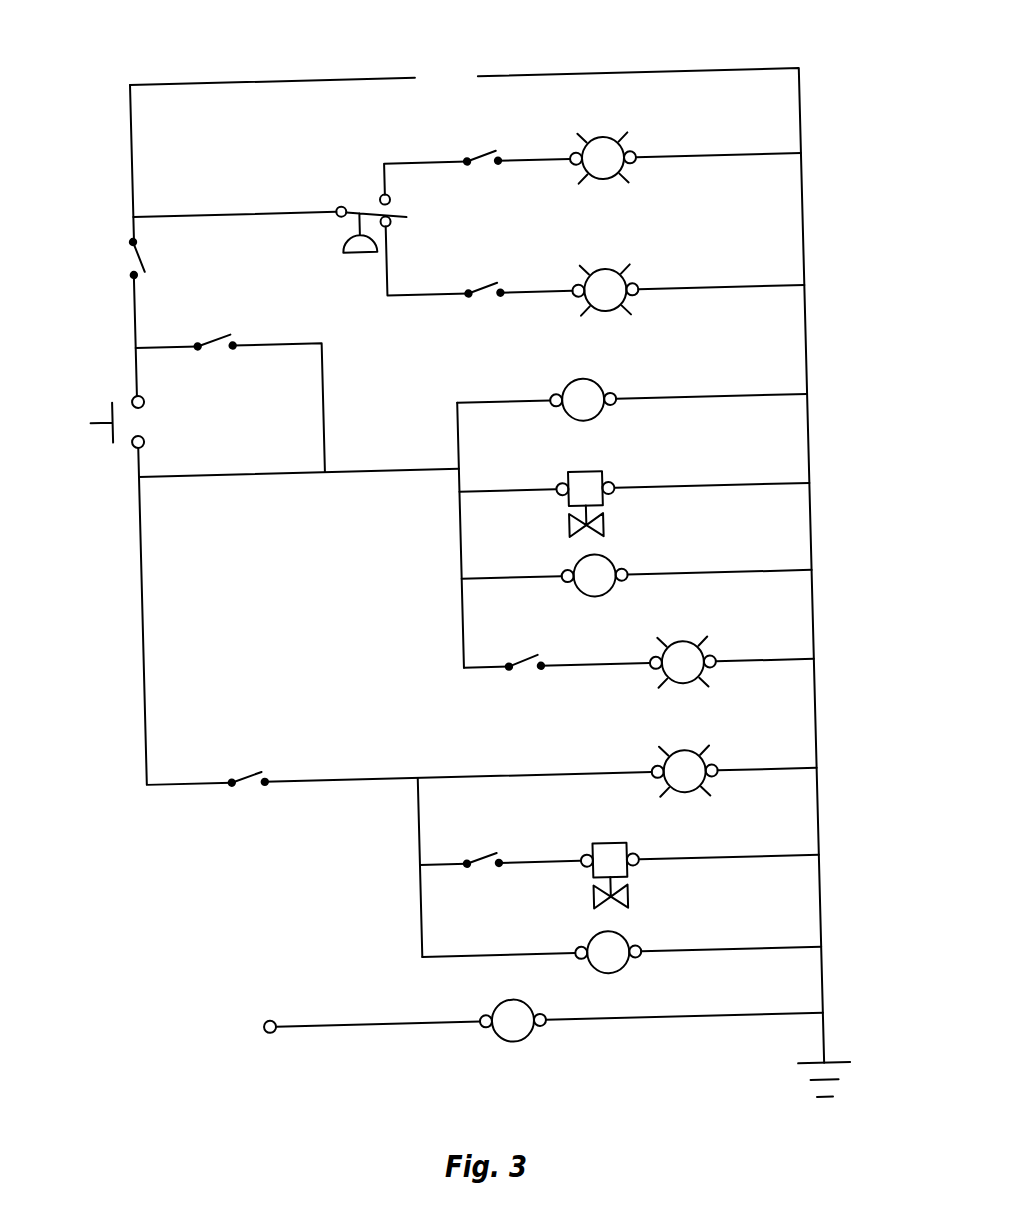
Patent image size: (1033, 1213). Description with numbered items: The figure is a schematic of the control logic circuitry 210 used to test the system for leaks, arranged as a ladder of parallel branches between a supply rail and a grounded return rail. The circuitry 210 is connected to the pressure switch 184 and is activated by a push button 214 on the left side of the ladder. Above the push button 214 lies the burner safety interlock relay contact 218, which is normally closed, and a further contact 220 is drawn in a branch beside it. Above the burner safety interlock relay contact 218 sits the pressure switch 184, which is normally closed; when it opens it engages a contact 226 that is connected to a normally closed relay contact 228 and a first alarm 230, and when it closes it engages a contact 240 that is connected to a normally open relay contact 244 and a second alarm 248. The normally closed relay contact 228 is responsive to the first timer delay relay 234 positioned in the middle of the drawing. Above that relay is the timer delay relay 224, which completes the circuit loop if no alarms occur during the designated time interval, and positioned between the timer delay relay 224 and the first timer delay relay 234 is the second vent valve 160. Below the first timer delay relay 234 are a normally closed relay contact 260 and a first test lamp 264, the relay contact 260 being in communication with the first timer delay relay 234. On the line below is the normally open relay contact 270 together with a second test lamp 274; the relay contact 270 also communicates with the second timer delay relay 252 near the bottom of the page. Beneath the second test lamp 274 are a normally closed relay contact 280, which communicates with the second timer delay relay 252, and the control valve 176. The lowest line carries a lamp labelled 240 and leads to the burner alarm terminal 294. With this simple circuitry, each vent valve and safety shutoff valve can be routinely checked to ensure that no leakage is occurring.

The control logic circuitry 210 is at (828, 84).
The burner safety interlock relay contact 218 is at (130, 257).
The pressure switch 184 is at (337, 207).
The contact 226 is at (391, 200).
The contact 240 is at (390, 226).
The bypass switch 220 is at (217, 338).
The push button 214 is at (112, 403).
The normally closed relay contact 228 is at (492, 153).
The first alarm 230 is at (608, 138).
The second alarm 248 is at (608, 270).
The normally open relay contact 244 is at (483, 298).
The timer delay relay 224 is at (583, 379).
The second vent valve 160 is at (593, 472).
The first timer delay relay 234 is at (609, 558).
The first test lamp 264 is at (688, 640).
The normally closed relay contact 260 is at (526, 670).
The second test lamp 274 is at (697, 750).
The normally open relay contact 270 is at (249, 773).
The normally closed relay contact 280 is at (478, 860).
The control valve 176 is at (607, 843).
The second timer delay relay 252 is at (587, 935).
The burner alarm terminal 294 is at (264, 1024).